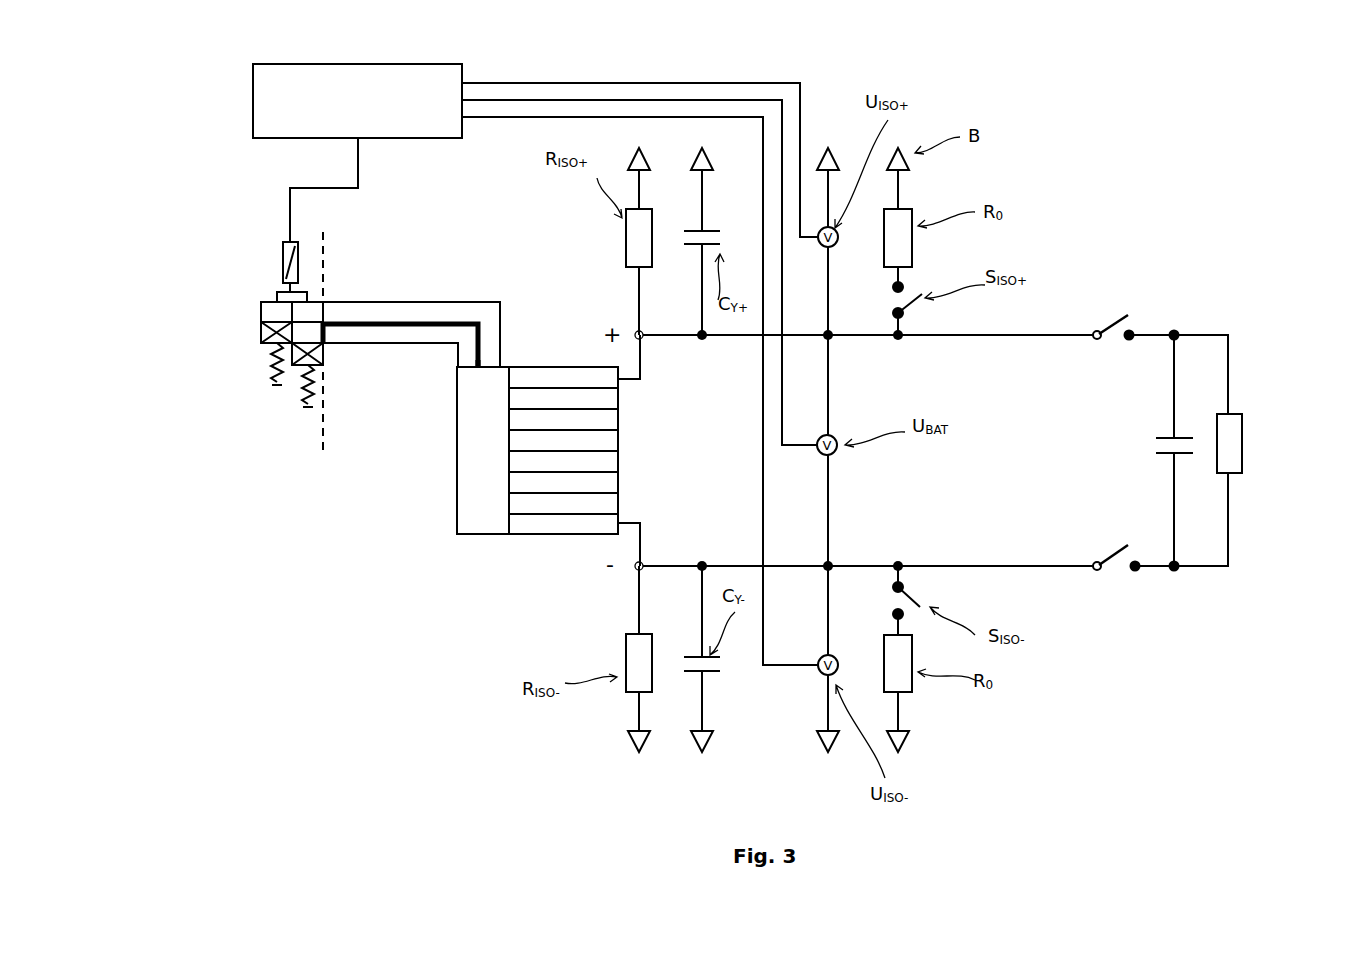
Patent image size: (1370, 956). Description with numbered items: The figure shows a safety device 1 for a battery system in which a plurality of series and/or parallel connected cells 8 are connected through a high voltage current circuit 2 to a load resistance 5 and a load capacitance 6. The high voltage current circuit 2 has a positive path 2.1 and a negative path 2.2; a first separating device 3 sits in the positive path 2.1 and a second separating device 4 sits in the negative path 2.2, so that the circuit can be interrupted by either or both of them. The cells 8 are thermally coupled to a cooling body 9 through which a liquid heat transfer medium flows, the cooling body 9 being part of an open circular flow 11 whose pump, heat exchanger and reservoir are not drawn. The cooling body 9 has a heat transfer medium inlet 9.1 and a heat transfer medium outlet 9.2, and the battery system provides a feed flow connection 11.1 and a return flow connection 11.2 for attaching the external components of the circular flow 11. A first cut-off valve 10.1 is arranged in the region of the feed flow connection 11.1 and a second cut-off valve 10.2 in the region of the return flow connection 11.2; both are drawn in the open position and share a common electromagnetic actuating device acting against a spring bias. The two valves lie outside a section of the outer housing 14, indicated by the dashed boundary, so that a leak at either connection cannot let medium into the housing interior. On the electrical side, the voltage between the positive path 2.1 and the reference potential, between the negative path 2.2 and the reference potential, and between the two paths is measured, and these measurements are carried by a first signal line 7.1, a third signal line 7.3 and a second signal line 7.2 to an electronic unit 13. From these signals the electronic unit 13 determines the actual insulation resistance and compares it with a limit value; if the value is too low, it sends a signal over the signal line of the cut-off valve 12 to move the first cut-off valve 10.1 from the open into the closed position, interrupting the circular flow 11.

The safety device 1 is at (1130, 101).
The high voltage current circuit 2 is at (1214, 323).
The positive path 2.1 is at (1030, 324).
The negative path 2.2 is at (1070, 584).
The first separating device 3 is at (1119, 301).
The second separating device 4 is at (1124, 585).
The load resistance 5 is at (1261, 427).
The load capacitance 6 is at (1136, 443).
The first signal line 7.1 is at (779, 77).
The second signal line 7.2 is at (797, 460).
The third signal line 7.3 is at (789, 678).
The cells 8 is at (551, 546).
The cooling body 9 is at (448, 484).
The heat transfer medium inlet 9.1 is at (486, 356).
The heat transfer medium outlet 9.2 is at (490, 381).
The first cut-off valve 10.1 is at (258, 349).
The second cut-off valve 10.2 is at (303, 439).
The circular flow 11 is at (504, 292).
The feed flow connection 11.1 is at (356, 294).
The return flow connection 11.2 is at (396, 351).
The signal line of the cut-off valve 12 is at (368, 173).
The electronic unit 13 is at (476, 55).
The outer housing 14 is at (333, 240).